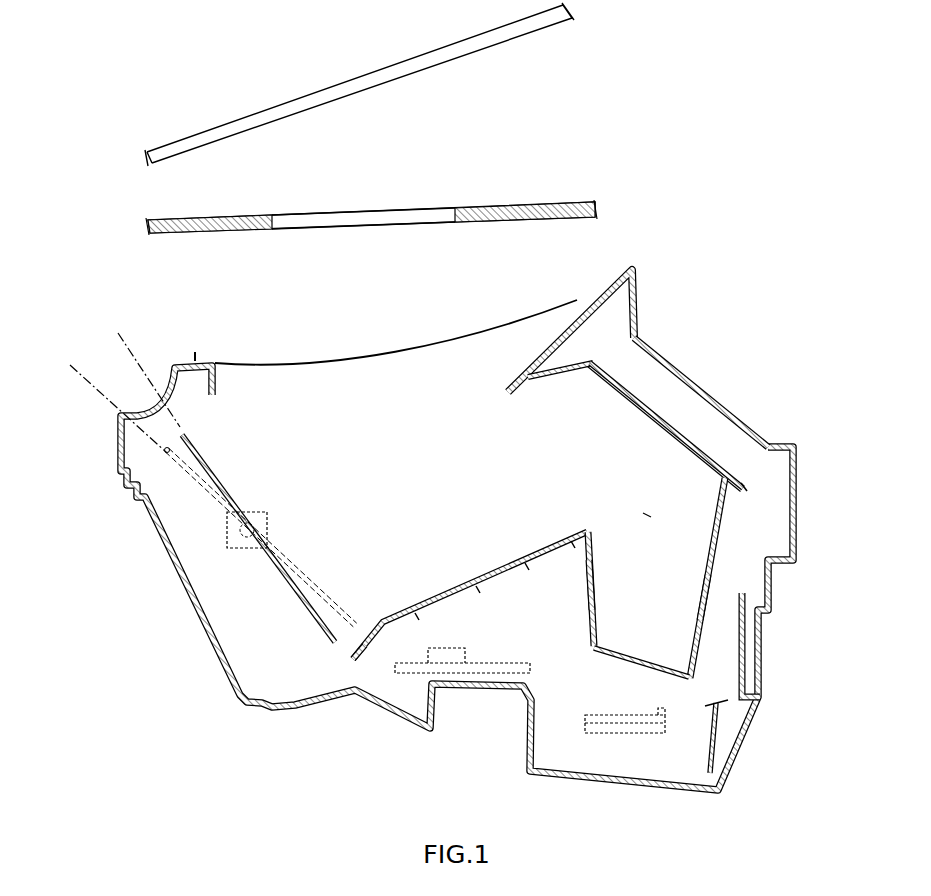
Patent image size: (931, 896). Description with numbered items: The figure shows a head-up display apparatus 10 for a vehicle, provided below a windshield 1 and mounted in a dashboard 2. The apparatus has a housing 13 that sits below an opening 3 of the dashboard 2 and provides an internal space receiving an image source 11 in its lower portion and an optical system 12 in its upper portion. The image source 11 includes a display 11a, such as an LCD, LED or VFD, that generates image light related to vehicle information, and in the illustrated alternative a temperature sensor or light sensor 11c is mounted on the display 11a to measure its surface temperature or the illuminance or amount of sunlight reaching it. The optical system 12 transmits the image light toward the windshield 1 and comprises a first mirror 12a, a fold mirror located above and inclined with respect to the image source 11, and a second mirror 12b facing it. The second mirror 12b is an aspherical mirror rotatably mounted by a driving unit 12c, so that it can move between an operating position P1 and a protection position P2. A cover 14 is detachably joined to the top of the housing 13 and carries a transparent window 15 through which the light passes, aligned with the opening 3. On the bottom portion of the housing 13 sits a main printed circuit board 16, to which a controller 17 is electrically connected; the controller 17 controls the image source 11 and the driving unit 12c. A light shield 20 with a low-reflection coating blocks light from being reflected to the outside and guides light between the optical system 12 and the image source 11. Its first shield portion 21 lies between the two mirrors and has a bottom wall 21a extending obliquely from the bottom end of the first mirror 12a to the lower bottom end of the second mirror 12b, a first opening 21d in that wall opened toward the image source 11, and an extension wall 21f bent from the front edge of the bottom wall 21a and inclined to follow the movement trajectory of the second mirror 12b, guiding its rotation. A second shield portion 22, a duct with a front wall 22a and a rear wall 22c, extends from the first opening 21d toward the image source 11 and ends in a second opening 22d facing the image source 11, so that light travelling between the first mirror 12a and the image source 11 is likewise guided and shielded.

The windshield 1 is at (390, 66).
The dashboard 2 is at (520, 211).
The opening 3 is at (387, 213).
The head-up display apparatus 10 is at (100, 463).
The image source 11 is at (645, 751).
The display 11a is at (622, 715).
The temperature sensor or light sensor 11c is at (665, 713).
The optical system 12 is at (643, 385).
The first mirror 12a is at (667, 426).
The second mirror 12b is at (303, 610).
The driving unit 12c is at (263, 512).
The housing 13 is at (773, 635).
The cover 14 is at (735, 403).
The transparent window 15 is at (380, 360).
The main printed circuit board 16 is at (413, 673).
The controller 17 is at (427, 652).
The light shield 20 is at (542, 575).
The first shield portion 21 is at (427, 605).
The bottom wall 21a is at (470, 585).
The first opening 21d is at (647, 515).
The extension wall 21f is at (350, 652).
The second shield portion 22 is at (669, 578).
The front wall 22a is at (590, 607).
The rear wall 22c is at (710, 598).
The second opening 22d is at (620, 656).
The operating position P1 is at (137, 357).
The protection position P2 is at (108, 398).